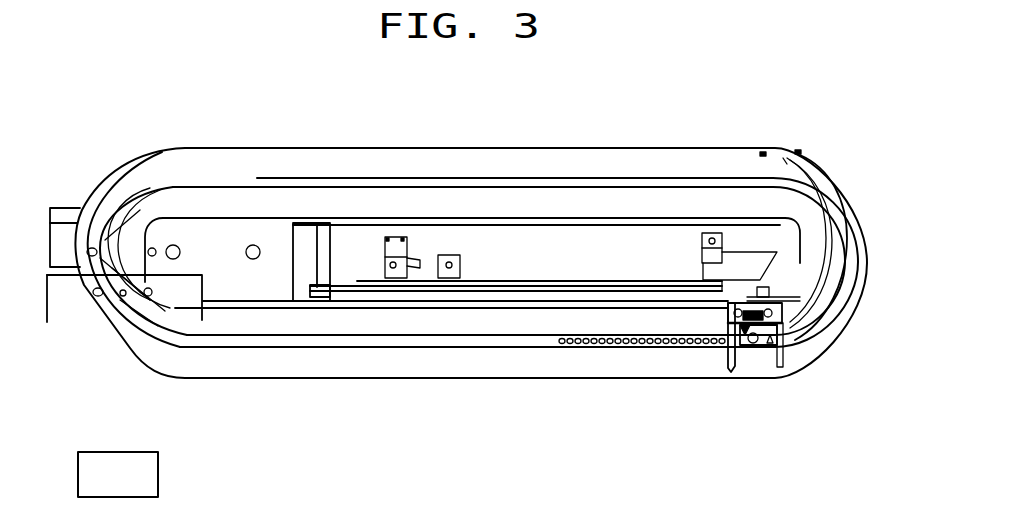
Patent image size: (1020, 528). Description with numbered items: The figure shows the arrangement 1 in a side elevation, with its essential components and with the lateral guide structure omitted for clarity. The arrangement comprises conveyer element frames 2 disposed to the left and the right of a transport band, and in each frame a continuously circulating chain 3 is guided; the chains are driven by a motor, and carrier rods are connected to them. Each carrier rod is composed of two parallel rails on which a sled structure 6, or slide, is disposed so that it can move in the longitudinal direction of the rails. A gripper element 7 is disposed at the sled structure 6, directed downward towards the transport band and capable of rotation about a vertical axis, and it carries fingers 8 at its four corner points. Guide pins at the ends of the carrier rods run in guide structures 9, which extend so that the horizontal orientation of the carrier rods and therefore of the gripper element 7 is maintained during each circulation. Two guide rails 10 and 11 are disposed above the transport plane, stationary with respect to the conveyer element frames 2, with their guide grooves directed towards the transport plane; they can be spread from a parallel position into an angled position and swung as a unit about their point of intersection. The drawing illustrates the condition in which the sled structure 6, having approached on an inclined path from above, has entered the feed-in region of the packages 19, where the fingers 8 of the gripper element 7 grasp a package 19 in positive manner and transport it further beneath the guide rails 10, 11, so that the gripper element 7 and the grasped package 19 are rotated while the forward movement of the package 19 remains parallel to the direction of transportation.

The arrangement 1 is at (402, 389).
The conveyer element frame 2 is at (607, 165).
The chain 3 is at (560, 342).
The sled structure 6 is at (782, 325).
The gripper element 7 is at (748, 343).
The fingers 8 is at (737, 377).
The guide structures 9 is at (815, 200).
The guide rail 10 is at (540, 293).
The guide rail 11 is at (516, 286).
The package 19 is at (150, 478).